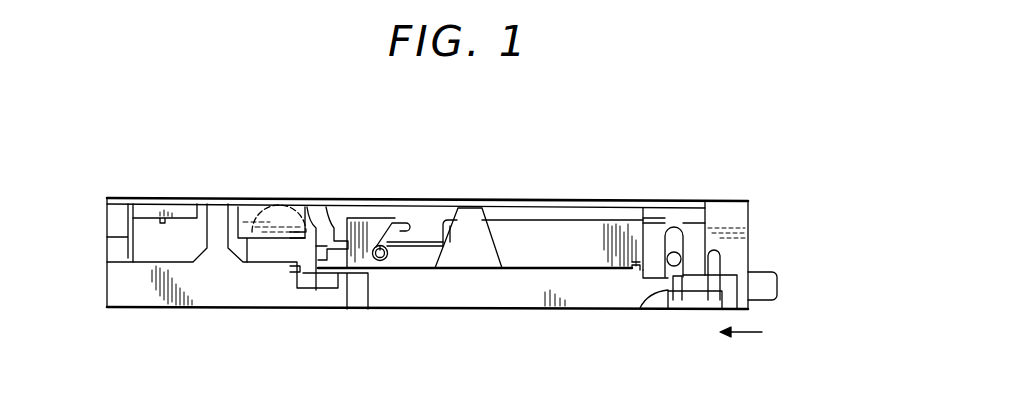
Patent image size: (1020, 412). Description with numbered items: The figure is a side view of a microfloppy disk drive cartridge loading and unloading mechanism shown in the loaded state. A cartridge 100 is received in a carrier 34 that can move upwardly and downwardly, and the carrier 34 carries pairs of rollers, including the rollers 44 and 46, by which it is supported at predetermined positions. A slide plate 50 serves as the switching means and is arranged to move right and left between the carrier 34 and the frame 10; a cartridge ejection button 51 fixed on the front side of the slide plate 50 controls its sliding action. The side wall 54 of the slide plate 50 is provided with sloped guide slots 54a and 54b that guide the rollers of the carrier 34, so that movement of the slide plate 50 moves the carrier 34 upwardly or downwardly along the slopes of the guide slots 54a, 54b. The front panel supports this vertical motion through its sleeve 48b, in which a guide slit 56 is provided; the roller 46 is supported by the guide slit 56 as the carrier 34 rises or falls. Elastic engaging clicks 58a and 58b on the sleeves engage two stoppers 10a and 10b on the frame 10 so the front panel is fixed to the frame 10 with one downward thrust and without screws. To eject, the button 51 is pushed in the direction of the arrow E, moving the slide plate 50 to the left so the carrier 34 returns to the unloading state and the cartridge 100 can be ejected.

The frame 10 is at (383, 297).
The stopper 10a is at (660, 292).
The stopper 10b is at (740, 295).
The carrier 34 is at (335, 227).
The roller 44 is at (373, 226).
The roller 46 is at (638, 272).
The sleeve 48b is at (737, 225).
The slide plate 50 is at (507, 270).
The cartridge ejection button 51 is at (762, 274).
The side wall 54 is at (528, 270).
The guide slot 54a is at (407, 227).
The guide slot 54b is at (684, 238).
The guide slit 56 is at (667, 228).
The elastic engaging click 58a is at (675, 303).
The elastic engaging click 58b is at (711, 303).
The cartridge 100 is at (393, 253).
The arrow E is at (742, 333).